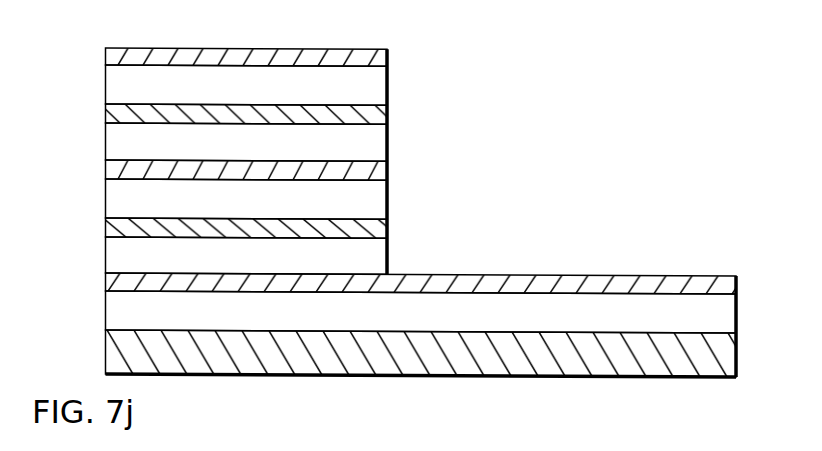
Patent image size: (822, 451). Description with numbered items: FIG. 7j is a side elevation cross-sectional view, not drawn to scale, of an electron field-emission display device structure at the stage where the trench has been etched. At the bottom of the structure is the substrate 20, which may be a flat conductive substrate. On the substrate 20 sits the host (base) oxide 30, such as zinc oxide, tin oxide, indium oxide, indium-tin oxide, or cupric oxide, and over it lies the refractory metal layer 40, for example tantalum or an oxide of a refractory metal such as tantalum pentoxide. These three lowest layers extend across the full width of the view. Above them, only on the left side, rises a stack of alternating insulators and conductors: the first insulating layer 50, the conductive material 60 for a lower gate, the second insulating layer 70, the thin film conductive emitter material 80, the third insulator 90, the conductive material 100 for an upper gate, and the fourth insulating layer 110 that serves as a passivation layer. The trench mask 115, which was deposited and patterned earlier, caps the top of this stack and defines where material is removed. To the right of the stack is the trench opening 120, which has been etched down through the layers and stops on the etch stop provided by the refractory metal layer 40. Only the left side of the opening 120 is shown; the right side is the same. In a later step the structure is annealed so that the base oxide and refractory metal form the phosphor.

The substrate 20 is at (722, 356).
The host (base) oxide 30 is at (718, 318).
The refractory metal layer 40 is at (727, 288).
The first insulating layer 50 is at (117, 256).
The conductive material for a lower gate 60 is at (117, 228).
The second insulating layer 70 is at (117, 202).
The thin film conductive emitter material 80 is at (115, 170).
The third insulator 90 is at (118, 138).
The conductive material for an upper gate 100 is at (113, 113).
The fourth insulating layer 110 is at (113, 78).
The trench mask 115 is at (206, 57).
The trench opening 120 is at (563, 224).